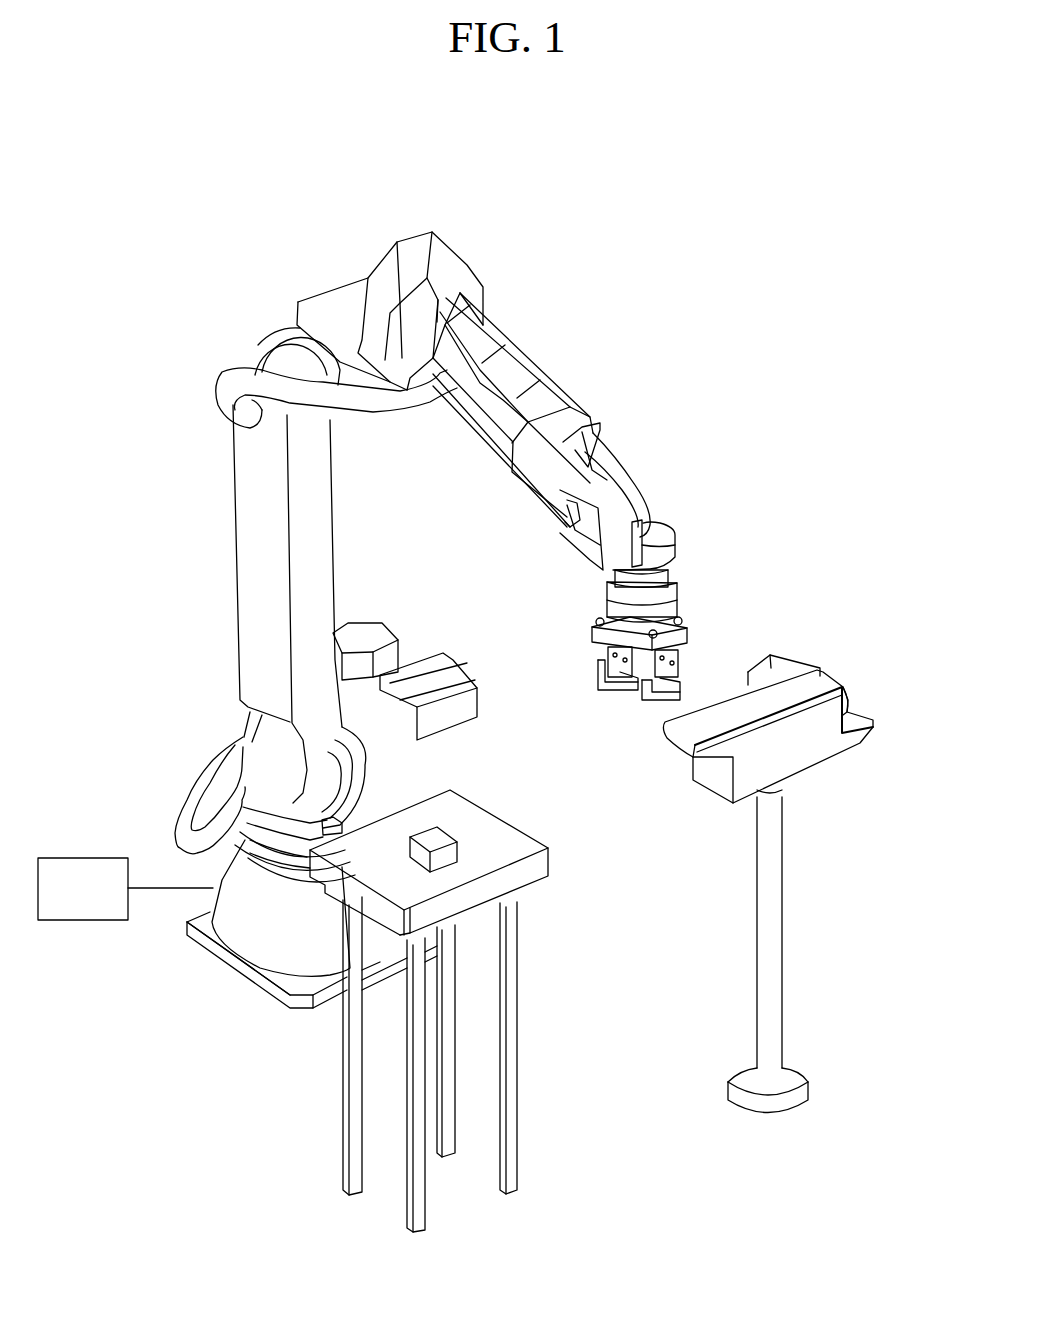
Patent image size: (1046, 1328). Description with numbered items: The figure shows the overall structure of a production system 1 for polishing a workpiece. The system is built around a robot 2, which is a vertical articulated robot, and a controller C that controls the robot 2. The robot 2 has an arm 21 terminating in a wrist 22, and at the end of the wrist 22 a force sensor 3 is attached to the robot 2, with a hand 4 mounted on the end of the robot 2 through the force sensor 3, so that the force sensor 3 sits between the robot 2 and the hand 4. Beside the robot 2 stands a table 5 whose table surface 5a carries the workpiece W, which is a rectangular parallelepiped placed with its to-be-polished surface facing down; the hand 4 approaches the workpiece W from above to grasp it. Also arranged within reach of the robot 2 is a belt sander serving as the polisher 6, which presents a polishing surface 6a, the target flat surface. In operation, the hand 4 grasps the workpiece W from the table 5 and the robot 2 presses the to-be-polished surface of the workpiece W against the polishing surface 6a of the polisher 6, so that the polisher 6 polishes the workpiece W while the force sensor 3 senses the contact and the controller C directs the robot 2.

The production system 1 is at (168, 148).
The robot 2 is at (260, 292).
The arm 21 is at (540, 380).
The wrist 22 is at (692, 542).
The force sensor 3 is at (680, 616).
The hand 4 is at (588, 691).
The table 5 is at (555, 868).
The table surface 5a is at (505, 845).
The workpiece W is at (460, 826).
The belt sander (polisher) 6 is at (838, 790).
The polishing surface 6a is at (790, 690).
The controller C is at (125, 889).